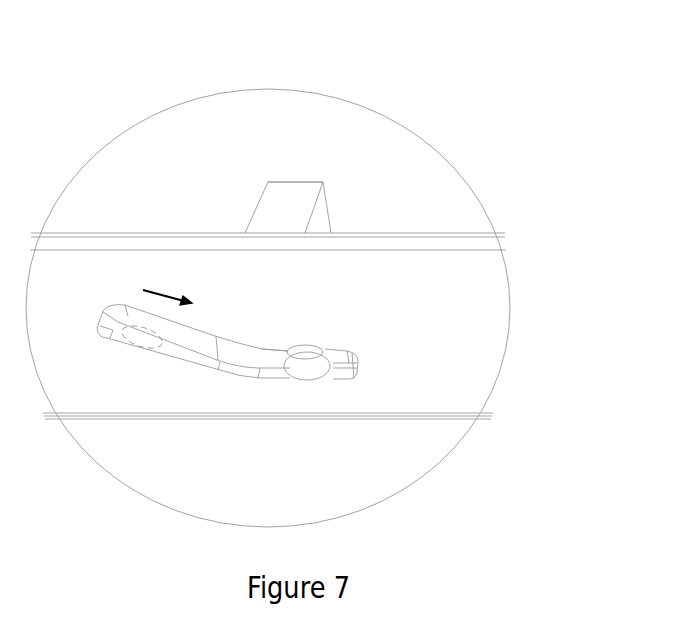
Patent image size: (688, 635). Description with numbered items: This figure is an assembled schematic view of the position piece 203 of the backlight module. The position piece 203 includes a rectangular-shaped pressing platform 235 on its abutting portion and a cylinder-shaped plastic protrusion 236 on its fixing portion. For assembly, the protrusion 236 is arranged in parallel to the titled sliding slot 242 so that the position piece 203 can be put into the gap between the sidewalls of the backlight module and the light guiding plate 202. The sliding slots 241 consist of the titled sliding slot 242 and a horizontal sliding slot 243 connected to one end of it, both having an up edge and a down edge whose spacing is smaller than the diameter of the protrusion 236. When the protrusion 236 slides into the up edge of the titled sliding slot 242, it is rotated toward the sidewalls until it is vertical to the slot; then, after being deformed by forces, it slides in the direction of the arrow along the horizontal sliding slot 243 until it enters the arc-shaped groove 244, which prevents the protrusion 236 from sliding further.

The light guiding plate 202 is at (388, 223).
The position piece 203 is at (273, 197).
The pressing platform 235 is at (293, 212).
The protrusion 236 is at (313, 370).
The sliding slots 241 is at (231, 395).
The titled sliding slot 242 is at (192, 355).
The horizontal sliding slot 243 is at (295, 304).
The groove 244 is at (320, 350).